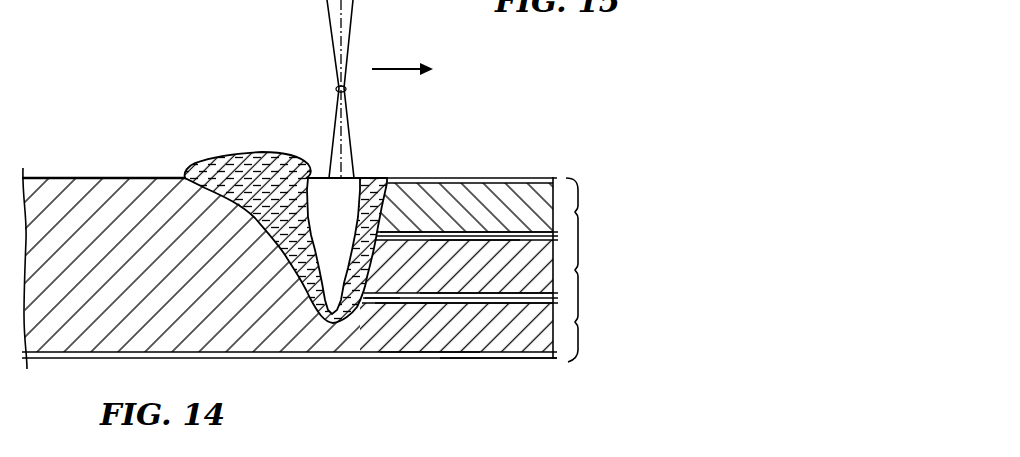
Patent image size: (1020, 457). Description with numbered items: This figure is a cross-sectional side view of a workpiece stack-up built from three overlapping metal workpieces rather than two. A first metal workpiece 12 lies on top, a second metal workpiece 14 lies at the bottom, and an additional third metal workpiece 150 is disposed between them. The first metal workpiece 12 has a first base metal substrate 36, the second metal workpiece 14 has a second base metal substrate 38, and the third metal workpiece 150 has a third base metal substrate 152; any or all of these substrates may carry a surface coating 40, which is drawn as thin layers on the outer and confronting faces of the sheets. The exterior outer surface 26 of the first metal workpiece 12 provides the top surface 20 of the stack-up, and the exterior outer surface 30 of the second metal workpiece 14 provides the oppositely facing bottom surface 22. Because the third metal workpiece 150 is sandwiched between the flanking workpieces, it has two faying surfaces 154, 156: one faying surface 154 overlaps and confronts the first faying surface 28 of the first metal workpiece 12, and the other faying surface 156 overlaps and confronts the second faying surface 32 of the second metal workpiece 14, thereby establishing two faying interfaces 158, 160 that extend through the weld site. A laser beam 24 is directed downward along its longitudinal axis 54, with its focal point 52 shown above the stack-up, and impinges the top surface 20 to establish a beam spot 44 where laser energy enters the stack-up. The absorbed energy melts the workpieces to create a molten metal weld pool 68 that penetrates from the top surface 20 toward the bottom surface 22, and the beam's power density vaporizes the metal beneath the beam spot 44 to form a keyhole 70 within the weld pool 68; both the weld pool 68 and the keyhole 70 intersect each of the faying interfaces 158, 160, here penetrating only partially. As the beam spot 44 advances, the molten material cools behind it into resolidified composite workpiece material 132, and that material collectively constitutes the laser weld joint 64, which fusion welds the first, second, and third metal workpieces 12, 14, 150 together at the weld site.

The first metal workpiece 12 is at (579, 212).
The second metal workpiece 14 is at (579, 320).
The top surface of the workpiece stack-up 20 is at (452, 168).
The bottom surface of the workpiece stack-up 22 is at (418, 372).
The laser beam 24 is at (328, 33).
The exterior outer surface of the first metal workpiece 26 is at (499, 178).
The first faying surface 28 is at (403, 238).
The exterior outer surface of the second metal workpiece 30 is at (485, 362).
The second faying surface 32 is at (413, 299).
The first base metal substrate 36 is at (543, 208).
The second base metal substrate 38 is at (541, 328).
The surface coating 40 is at (557, 178).
The beam spot 44 is at (354, 176).
The focal point 52 is at (339, 87).
The longitudinal axis of the laser beam 54 is at (350, 26).
The laser weld joint 64 is at (92, 208).
The molten metal weld pool 68 is at (248, 165).
The keyhole 70 is at (333, 186).
The resolidified composite workpiece material 132 is at (160, 185).
The third metal workpiece 150 is at (556, 277).
The third base metal substrate 152 is at (579, 282).
The faying surface of the third metal workpiece 154 is at (440, 243).
The faying surface of the third metal workpiece 156 is at (383, 301).
The faying interface 158 is at (398, 227).
The faying interface 160 is at (372, 314).